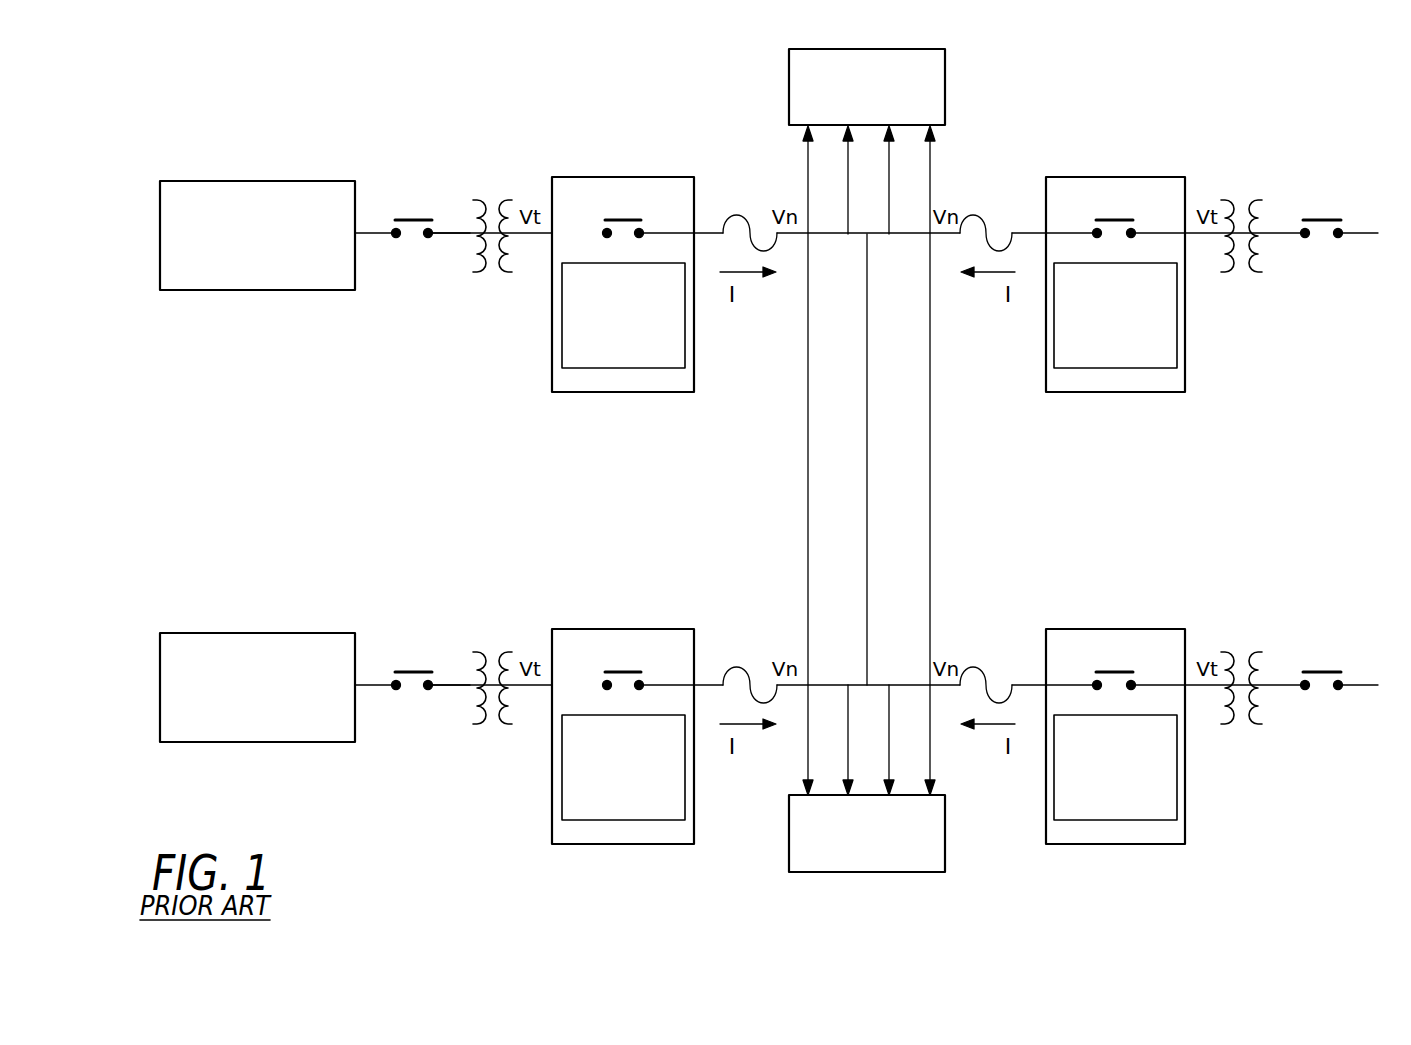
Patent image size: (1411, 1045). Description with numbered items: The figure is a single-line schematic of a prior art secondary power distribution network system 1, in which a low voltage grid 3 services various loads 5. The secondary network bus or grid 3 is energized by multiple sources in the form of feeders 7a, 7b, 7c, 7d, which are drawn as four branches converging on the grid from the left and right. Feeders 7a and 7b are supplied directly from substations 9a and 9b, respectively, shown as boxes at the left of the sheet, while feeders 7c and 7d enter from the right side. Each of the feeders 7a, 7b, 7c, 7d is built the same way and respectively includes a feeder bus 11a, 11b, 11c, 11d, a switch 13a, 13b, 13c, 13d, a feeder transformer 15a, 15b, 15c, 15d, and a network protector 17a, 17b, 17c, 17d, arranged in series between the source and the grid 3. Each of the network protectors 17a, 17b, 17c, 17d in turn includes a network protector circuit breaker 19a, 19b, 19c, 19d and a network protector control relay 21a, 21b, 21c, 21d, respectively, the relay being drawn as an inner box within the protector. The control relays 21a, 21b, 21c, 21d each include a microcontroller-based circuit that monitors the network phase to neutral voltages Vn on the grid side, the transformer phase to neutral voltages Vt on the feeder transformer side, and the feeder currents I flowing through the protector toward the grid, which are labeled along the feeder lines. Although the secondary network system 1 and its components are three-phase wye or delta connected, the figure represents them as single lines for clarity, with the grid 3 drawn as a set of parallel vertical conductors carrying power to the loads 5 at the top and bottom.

The secondary power distribution network system 1 is at (1160, 485).
The low voltage grid 3 is at (960, 490).
The loads 5 is at (905, 49).
The feeder 7a is at (436, 170).
The feeder 7b is at (453, 608).
The feeder 7c is at (1303, 170).
The feeder 7d is at (1337, 608).
The substation 9a is at (191, 181).
The substation 9b is at (253, 668).
The feeder bus 11a is at (448, 237).
The feeder bus 11b is at (437, 712).
The feeder bus 11c is at (1288, 237).
The feeder bus 11d is at (1236, 712).
The switch 13a is at (418, 218).
The switch 13b is at (404, 655).
The switch 13c is at (1316, 218).
The switch 13d is at (1337, 656).
The feeder transformer 15a is at (497, 275).
The feeder transformer 15b is at (483, 711).
The feeder transformer 15c is at (1235, 275).
The feeder transformer 15d is at (1255, 711).
The network protector 17a is at (603, 232).
The network protector 17b is at (604, 684).
The network protector 17c is at (1142, 232).
The network protector 17d is at (1143, 684).
The network protector circuit breaker 19a is at (654, 177).
The network protector circuit breaker 19b is at (657, 640).
The network protector circuit breaker 19c is at (1084, 177).
The network protector circuit breaker 19d is at (1088, 640).
The network protector control relay 21a is at (567, 350).
The network protector control relay 21b is at (591, 767).
The network protector control relay 21c is at (1172, 350).
The network protector control relay 21d is at (1150, 767).